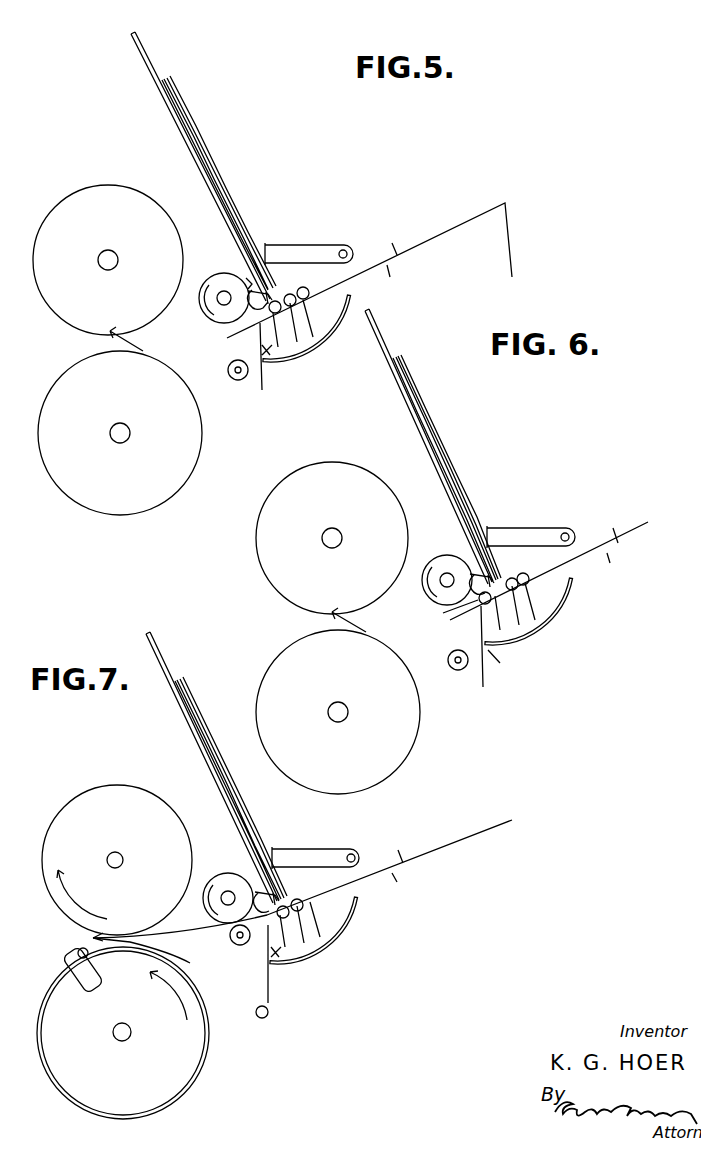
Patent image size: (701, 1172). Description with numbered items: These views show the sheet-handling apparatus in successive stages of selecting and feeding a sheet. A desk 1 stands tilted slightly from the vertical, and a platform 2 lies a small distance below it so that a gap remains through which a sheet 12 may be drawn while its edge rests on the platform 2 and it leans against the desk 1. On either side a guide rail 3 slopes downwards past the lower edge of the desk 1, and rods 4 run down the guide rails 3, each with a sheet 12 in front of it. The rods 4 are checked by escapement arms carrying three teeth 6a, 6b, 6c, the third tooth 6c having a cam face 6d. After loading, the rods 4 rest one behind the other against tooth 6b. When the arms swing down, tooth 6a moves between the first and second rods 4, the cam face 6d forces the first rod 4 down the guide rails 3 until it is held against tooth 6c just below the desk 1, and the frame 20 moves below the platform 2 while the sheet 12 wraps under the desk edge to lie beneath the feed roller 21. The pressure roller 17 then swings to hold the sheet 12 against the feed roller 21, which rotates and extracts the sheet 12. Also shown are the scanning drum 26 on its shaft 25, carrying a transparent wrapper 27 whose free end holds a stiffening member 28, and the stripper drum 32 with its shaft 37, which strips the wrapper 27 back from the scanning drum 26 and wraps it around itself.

In FIG. 5, the desk 1 is at (150, 49).
In FIG. 6, the desk 1 is at (378, 332).
In FIG. 7, the desk 1 is at (158, 655).
In FIG. 5, the sheet 12 is at (185, 103).
In FIG. 6, the sheet 12 is at (428, 421).
In FIG. 7, the sheet 12 is at (240, 800).
In FIG. 5, the tooth 6a is at (277, 296).
In FIG. 5, the tooth 6b is at (262, 318).
In FIG. 5, the tooth 6c is at (237, 328).
In FIG. 6, the tooth 6c is at (452, 620).
In FIG. 5, the cam face 6d is at (247, 280).
In FIG. 5, the rod 4 is at (308, 290).
In FIG. 7, the rod 4 is at (301, 902).
In FIG. 5, the guide rail 3 is at (433, 240).
In FIG. 5, the frame 20 is at (268, 352).
In FIG. 6, the frame 20 is at (500, 663).
In FIG. 7, the frame 20 is at (282, 957).
In FIG. 5, the pressure feed roller 17 is at (237, 380).
In FIG. 6, the pressure feed roller 17 is at (455, 670).
In FIG. 7, the pressure feed roller 17 is at (243, 945).
In FIG. 6, the feed roller 21 is at (445, 565).
In FIG. 7, the feed roller 21 is at (233, 883).
In FIG. 6, the platform 2 is at (533, 627).
In FIG. 7, the scanning drum 26 is at (67, 815).
In FIG. 7, the shaft 25 is at (123, 859).
In FIG. 7, the transparent wrapper 27 is at (97, 937).
In FIG. 7, the stiffening member 28 is at (80, 951).
In FIG. 7, the drum axle 37 is at (130, 1034).
In FIG. 7, the stripper drum 32 is at (158, 1080).